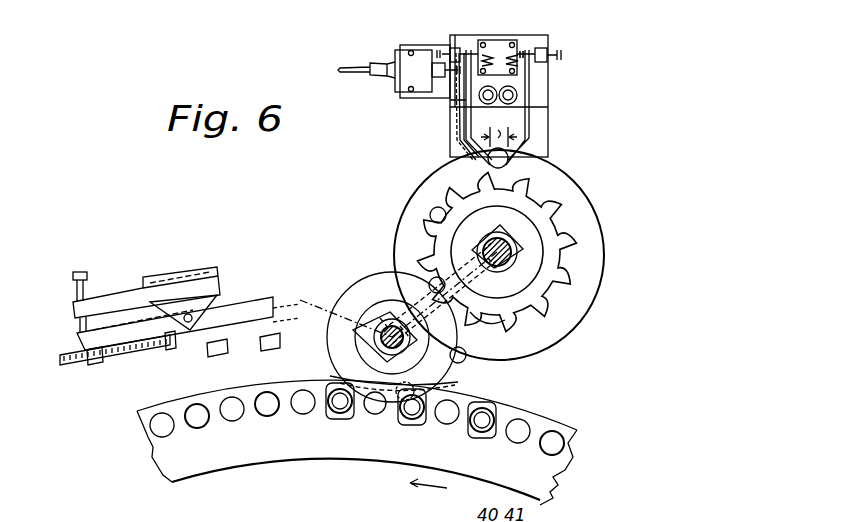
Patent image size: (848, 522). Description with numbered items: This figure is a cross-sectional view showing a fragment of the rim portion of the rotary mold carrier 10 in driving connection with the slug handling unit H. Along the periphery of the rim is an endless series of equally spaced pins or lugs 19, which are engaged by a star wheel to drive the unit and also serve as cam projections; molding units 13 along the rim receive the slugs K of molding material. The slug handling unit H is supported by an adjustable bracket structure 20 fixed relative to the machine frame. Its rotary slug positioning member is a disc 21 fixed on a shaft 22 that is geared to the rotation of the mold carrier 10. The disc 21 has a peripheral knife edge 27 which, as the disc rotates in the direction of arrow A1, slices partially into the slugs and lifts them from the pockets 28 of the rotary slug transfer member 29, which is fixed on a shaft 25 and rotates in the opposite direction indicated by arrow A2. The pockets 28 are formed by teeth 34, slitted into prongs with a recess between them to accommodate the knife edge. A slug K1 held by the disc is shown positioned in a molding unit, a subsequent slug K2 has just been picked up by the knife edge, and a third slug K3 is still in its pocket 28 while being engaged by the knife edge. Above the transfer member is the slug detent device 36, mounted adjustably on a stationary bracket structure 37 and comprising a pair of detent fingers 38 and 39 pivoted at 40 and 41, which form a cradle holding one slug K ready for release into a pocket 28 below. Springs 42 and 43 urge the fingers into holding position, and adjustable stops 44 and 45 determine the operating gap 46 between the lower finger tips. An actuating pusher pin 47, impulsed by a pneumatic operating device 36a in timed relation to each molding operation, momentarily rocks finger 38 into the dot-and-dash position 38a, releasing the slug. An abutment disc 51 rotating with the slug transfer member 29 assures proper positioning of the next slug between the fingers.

The mold carrier 10 is at (148, 466).
The bracketed holes 13 is at (480, 437).
The lugs 19 is at (262, 412).
The bracket structure 20 is at (241, 265).
The disc 21 is at (452, 380).
The shaft 22 is at (384, 337).
The shaft 25 is at (502, 250).
The knife edge 27 is at (337, 373).
The pockets 28 is at (562, 296).
The slug transfer member 29 is at (535, 223).
The teeth 34 is at (508, 320).
The slug detent device 36 is at (556, 94).
The pneumatic operating device 36a is at (402, 62).
The bracket structure 37 is at (466, 37).
The detent finger 38 is at (462, 118).
The tripped position of detent finger 38a is at (457, 145).
The detent finger 39 is at (531, 139).
The pivot 40 is at (462, 100).
The pivot 41 is at (515, 95).
The spring 42 is at (489, 42).
The spring 43 is at (525, 51).
The adjustable stop 44 is at (439, 50).
The adjustable stop 45 is at (560, 52).
The operating gap 46 is at (499, 130).
The actuating pusher pin 47 is at (450, 73).
The abutment disc 51 is at (603, 253).
The slug K is at (509, 160).
The slug K1 is at (398, 406).
The slug K2 is at (465, 352).
The slug K3 is at (432, 279).
The arrow A1 is at (360, 270).
The arrow A2 is at (396, 185).
The slug handling unit H is at (598, 347).